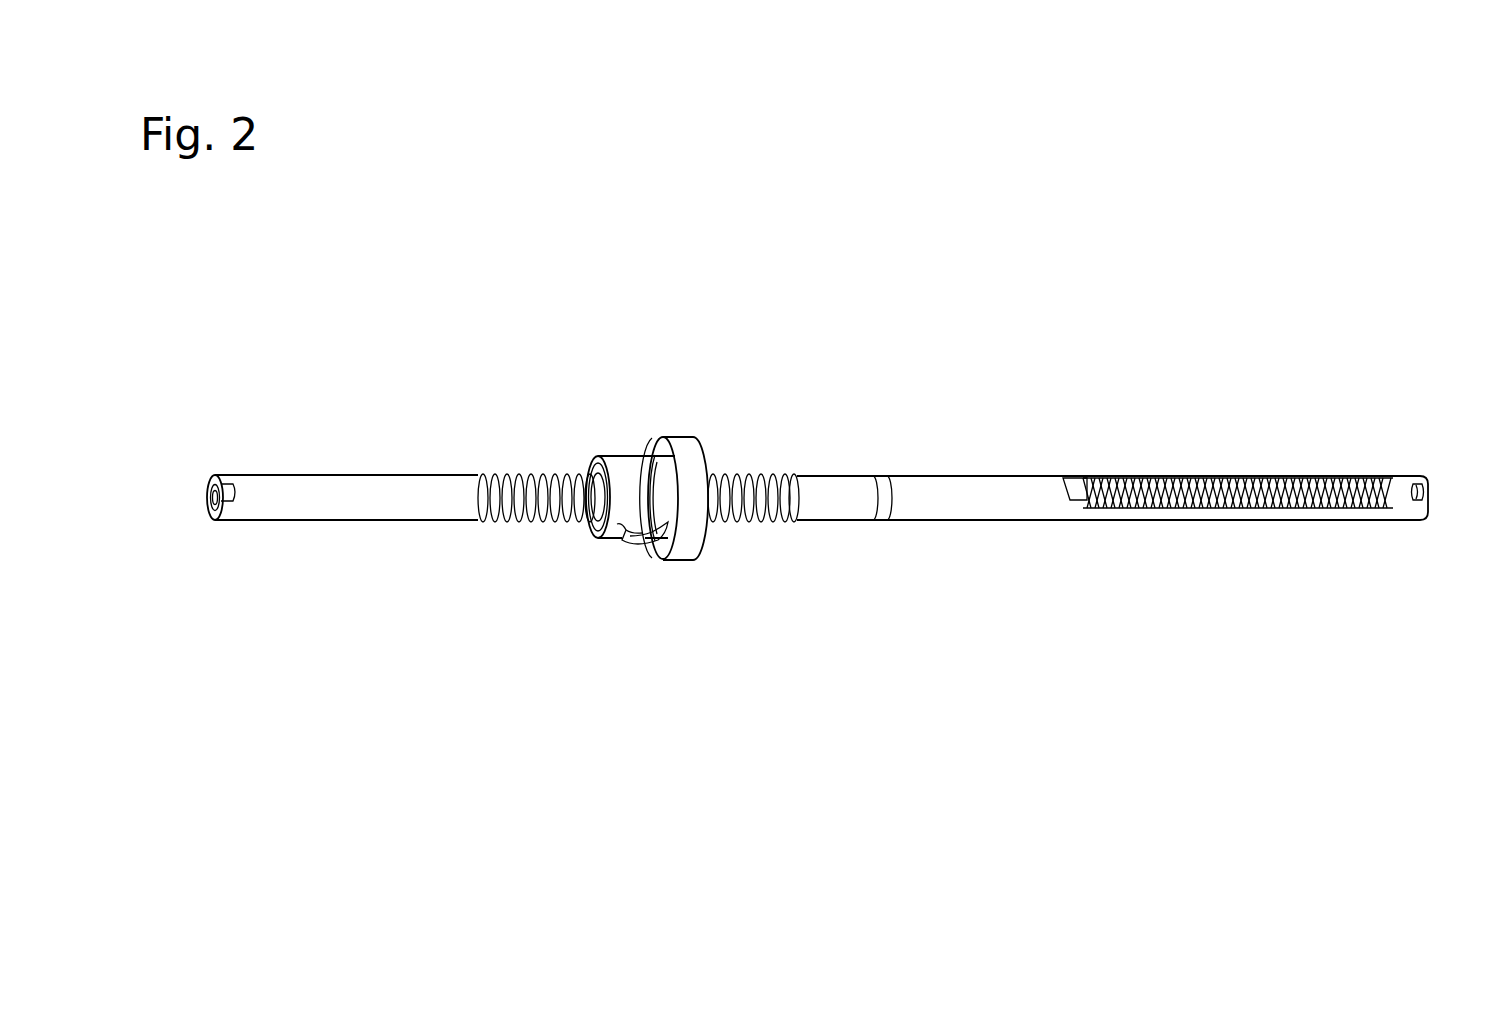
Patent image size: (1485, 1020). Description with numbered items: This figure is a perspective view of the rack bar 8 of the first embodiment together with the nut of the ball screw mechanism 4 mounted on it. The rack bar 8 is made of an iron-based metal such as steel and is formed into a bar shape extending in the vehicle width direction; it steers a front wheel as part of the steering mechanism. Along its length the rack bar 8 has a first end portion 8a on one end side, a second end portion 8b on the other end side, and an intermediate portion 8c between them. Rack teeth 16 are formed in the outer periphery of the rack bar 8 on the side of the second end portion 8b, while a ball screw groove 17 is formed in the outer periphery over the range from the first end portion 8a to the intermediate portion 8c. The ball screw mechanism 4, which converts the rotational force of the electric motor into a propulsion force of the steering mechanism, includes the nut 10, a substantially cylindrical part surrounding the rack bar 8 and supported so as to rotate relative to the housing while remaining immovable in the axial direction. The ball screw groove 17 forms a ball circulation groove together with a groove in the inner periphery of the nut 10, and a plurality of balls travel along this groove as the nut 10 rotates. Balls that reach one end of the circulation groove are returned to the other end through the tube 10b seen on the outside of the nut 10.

The ball screw mechanism 4 is at (635, 497).
The rack bar 8 is at (817, 489).
The first end portion 8a is at (289, 505).
The second end portion 8b is at (1403, 513).
The intermediate portion 8c is at (837, 521).
The nut 10 is at (628, 467).
The tube 10b is at (620, 546).
The rack teeth 16 is at (1207, 477).
The ball screw groove 17 is at (535, 521).